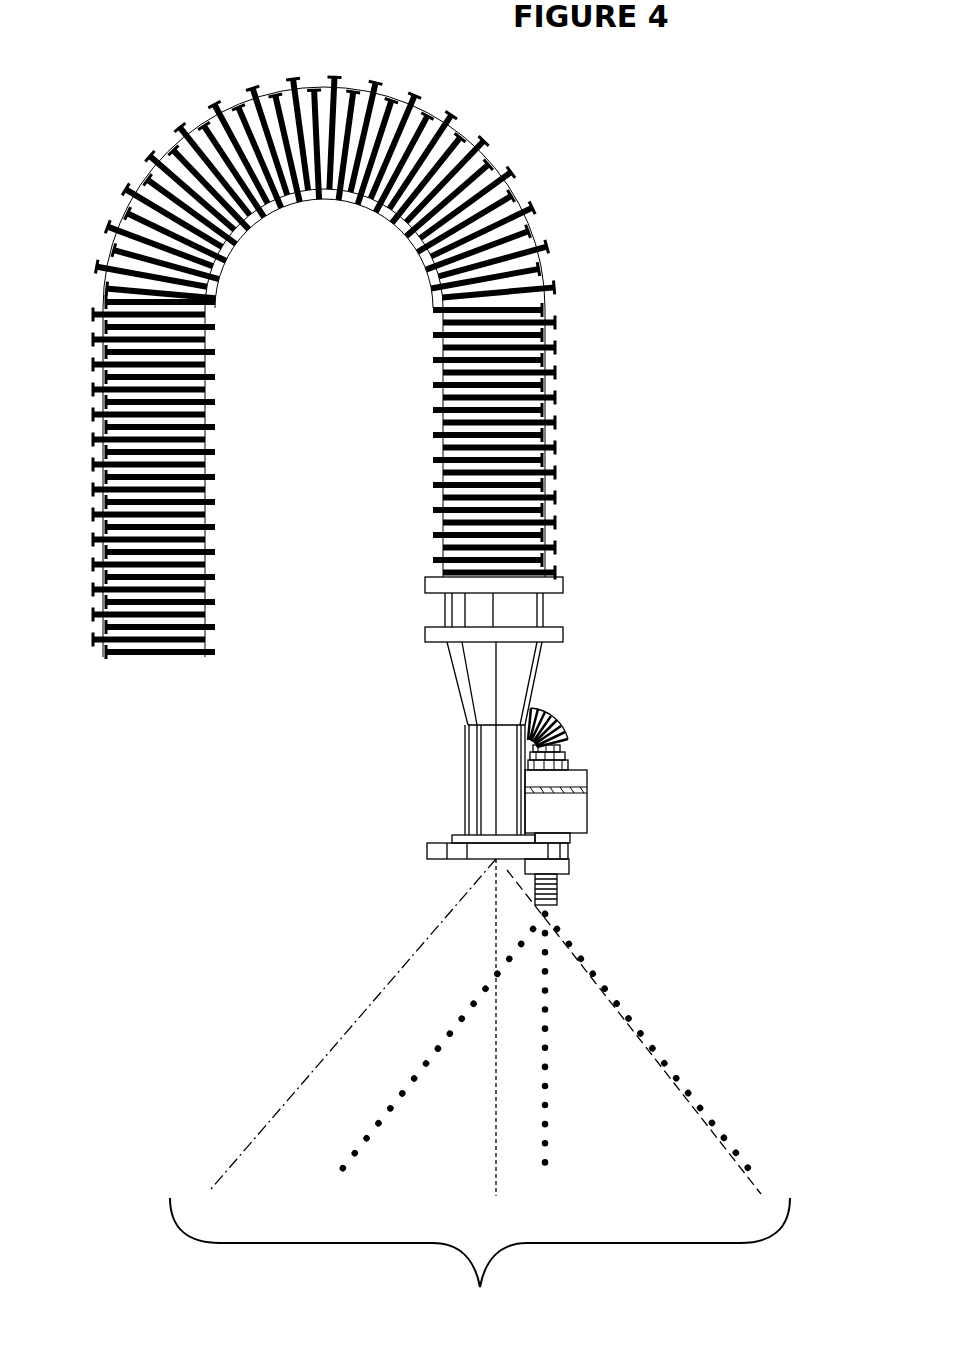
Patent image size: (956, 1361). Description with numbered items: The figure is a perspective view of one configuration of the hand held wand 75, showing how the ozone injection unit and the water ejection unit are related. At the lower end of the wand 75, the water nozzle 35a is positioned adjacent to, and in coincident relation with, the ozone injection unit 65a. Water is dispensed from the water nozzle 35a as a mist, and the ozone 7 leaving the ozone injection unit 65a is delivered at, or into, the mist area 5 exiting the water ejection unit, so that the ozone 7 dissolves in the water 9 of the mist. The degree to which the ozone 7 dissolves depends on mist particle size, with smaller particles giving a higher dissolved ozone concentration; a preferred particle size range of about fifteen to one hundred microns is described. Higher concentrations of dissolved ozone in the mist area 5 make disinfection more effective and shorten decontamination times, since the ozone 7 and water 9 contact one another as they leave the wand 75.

The hand held wand 75 is at (636, 670).
The water nozzle 35a is at (460, 790).
The ozone injection unit 65a is at (588, 770).
The mist area 5 is at (470, 910).
The ozone 7 is at (588, 907).
The water 9 is at (480, 1102).